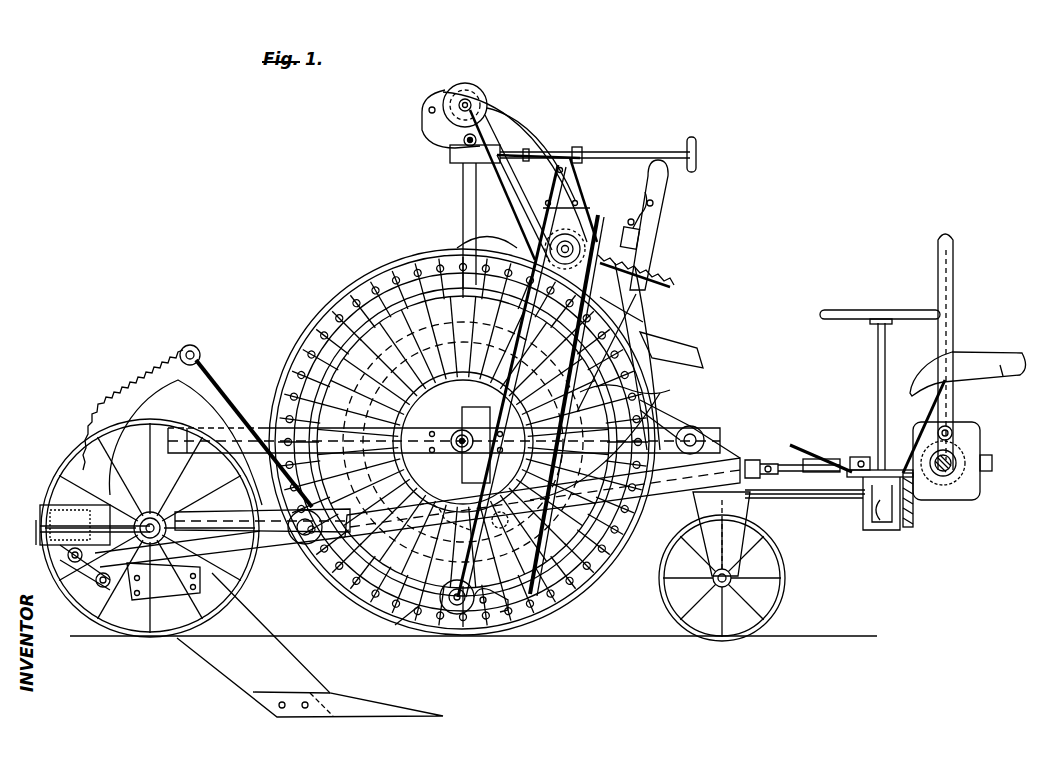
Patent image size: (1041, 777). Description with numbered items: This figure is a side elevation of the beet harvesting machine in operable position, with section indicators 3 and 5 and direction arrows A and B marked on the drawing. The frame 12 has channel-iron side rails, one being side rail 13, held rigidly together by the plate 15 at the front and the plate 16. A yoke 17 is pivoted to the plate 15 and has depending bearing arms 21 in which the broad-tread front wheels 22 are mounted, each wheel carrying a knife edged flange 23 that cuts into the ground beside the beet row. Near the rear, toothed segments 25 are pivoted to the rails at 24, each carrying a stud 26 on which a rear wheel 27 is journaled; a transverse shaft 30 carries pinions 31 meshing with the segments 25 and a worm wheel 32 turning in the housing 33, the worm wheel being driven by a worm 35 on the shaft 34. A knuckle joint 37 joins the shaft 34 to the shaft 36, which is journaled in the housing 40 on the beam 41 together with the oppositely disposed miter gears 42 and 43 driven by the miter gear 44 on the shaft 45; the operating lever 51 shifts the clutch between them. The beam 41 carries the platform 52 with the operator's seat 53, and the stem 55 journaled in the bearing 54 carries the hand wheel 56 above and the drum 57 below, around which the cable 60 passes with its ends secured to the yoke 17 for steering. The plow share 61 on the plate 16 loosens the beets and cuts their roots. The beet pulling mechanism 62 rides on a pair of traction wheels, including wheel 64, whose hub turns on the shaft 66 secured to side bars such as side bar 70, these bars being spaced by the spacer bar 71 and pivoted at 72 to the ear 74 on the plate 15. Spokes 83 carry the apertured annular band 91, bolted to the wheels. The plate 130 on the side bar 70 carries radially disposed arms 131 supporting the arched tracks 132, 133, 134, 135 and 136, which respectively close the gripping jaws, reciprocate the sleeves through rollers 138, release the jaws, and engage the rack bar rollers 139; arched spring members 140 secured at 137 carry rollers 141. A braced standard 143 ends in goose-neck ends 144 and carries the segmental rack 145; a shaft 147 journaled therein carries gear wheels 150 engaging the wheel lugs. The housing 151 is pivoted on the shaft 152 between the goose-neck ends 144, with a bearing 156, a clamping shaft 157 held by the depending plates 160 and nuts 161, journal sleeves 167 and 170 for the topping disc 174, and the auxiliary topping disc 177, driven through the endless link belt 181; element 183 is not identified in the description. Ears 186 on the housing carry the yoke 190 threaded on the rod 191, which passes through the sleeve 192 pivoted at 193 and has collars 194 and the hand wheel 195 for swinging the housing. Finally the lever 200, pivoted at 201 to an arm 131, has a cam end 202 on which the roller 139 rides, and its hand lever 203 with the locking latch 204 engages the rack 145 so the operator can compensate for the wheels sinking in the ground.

The section line 3 is at (458, 80).
The section line 5 is at (460, 644).
The direction of travel A is at (760, 652).
The direction of rotation B is at (645, 548).
The frame 12 is at (350, 575).
The side rail 13 is at (398, 628).
The plate 15 is at (738, 455).
The plate 16 is at (185, 506).
The yoke 17 is at (750, 500).
The bearing arms 21 is at (735, 532).
The front wheels 22 is at (765, 565).
The knife edged flanges 23 is at (785, 590).
The pivot 24 is at (298, 541).
The toothed segments 25 is at (133, 398).
The stud 26 is at (150, 570).
The rear wheels 27 is at (240, 588).
The transverse shaft 30 is at (60, 560).
The pinions 31 is at (50, 548).
The worm wheel 32 is at (45, 532).
The housing 33 is at (75, 537).
The shaft 34 is at (760, 458).
The worm 35 is at (42, 515).
The shaft 36 is at (875, 457).
The knuckle joint 37 is at (821, 453).
The housing 40 is at (985, 440).
The beam 41 is at (930, 510).
The miter gear 42 is at (921, 426).
The miter gear 43 is at (975, 465).
The miter gear 44 is at (940, 490).
The shaft 45 is at (950, 475).
The operating lever 51 is at (955, 326).
The platform 52 is at (866, 505).
The operator's seat 53 is at (1003, 376).
The bearing 54 is at (905, 530).
The stem 55 is at (876, 396).
The hand wheel 56 is at (868, 308).
The drum 57 is at (878, 520).
The cable 60 is at (860, 488).
The plow share 61 is at (278, 676).
The beet pulling mechanism 62 is at (380, 600).
The wheel 64 is at (590, 620).
The shaft 66 is at (475, 442).
The side bar 70 is at (690, 429).
The spacer bar 71 is at (210, 426).
The pivot 72 is at (700, 432).
The ear 74 is at (720, 440).
The spokes 83 is at (282, 402).
The annular band 91 is at (340, 312).
The plate 130 is at (515, 442).
The radially disposed arms 131 is at (380, 275).
The arched track 132 is at (282, 382).
The arched track 133 is at (300, 335).
The arched track 134 is at (596, 585).
The arched track 135 is at (640, 299).
The arched track 136 is at (466, 440).
The securing point 137 is at (655, 402).
The rollers 138 is at (395, 610).
The rollers 139 is at (690, 350).
The arched spring members 140 is at (602, 548).
The rollers 141 is at (455, 625).
The standard 143 is at (662, 335).
The goose-neck ends 144 is at (548, 110).
The segmental rack 145 is at (615, 266).
The shaft 147 is at (585, 240).
The gear wheels 150 is at (580, 212).
The housing 151 is at (450, 158).
The shaft 152 is at (445, 102).
The bearing 156 is at (560, 135).
The shaft 157 is at (462, 140).
The depending plates 160 is at (420, 128).
The nuts 161 is at (430, 150).
The journal sleeve 167 is at (566, 119).
The journal sleeve 170 is at (466, 194).
The topping disc 174 is at (441, 222).
The auxiliary topping disc 177 is at (545, 238).
The endless link belt 181 is at (568, 150).
The paddle 183 is at (704, 364).
The ears 186 is at (505, 108).
The yoke 190 is at (475, 207).
The rod 191 is at (592, 146).
The sleeve 192 is at (595, 135).
The pivot 193 is at (582, 160).
The collars 194 is at (601, 147).
The hand wheel 195 is at (700, 132).
The lever 200 is at (672, 392).
The pivot 201 is at (520, 518).
The cam end 202 is at (444, 516).
The hand lever 203 is at (670, 192).
The locking latch 204 is at (640, 236).